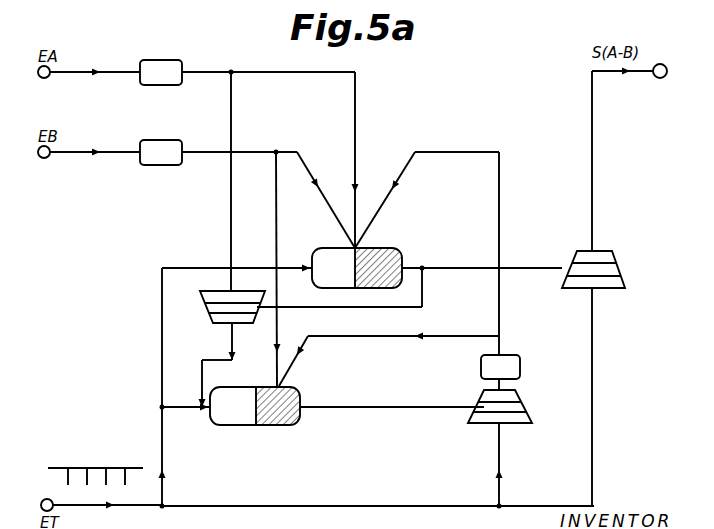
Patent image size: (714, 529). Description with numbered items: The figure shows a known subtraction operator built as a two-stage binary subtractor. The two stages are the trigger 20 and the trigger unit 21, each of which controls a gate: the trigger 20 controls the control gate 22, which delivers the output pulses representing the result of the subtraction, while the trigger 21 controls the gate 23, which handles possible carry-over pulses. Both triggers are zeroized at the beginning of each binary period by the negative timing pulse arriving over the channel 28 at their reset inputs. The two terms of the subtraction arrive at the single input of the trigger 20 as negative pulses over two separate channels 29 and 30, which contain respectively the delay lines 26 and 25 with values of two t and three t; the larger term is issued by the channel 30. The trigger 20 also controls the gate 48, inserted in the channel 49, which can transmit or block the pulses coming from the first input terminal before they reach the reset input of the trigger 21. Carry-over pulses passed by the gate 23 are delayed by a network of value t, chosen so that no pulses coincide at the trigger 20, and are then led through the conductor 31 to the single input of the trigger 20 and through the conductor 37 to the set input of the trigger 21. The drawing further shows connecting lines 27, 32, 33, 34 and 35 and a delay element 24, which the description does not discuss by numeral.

The trigger 20 is at (312, 285).
The trigger unit 21 is at (232, 427).
The control gate 22 is at (612, 268).
The gate 23 is at (520, 412).
The delay element t 24 is at (520, 365).
The delay line 25 is at (180, 60).
The delay line 26 is at (180, 140).
The timing line 27 is at (247, 507).
The channel 28 is at (162, 333).
The channel 29 is at (297, 152).
The channel 30 is at (355, 152).
The conductor 31 is at (418, 152).
The line 32 is at (450, 268).
The line 33 is at (342, 308).
The line 34 is at (400, 407).
The line 35 is at (277, 218).
The conductor 37 is at (350, 338).
The gate 48 is at (210, 312).
The channel 49 is at (231, 222).